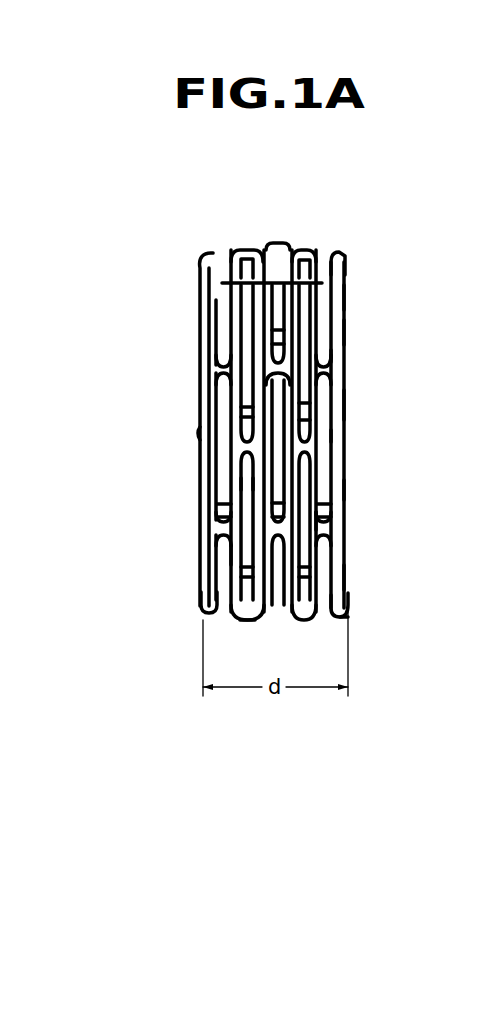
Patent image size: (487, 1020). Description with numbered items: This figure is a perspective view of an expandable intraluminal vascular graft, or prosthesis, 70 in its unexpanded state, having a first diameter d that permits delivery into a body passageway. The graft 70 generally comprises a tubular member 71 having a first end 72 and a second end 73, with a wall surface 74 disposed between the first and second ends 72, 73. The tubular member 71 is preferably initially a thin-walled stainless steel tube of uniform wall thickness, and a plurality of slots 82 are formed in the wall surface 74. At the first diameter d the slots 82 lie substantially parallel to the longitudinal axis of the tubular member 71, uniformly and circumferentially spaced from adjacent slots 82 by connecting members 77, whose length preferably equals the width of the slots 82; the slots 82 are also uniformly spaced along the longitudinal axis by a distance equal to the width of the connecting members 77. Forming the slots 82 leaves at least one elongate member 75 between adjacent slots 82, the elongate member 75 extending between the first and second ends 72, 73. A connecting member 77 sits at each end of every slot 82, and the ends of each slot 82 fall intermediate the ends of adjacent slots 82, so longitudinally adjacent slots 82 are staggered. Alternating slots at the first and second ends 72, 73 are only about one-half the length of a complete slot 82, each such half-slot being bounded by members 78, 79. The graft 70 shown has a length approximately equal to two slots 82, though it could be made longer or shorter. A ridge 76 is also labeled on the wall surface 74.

The expandable intraluminal vascular graft 70 is at (338, 248).
The tubular member 71 is at (345, 405).
The first end 72 is at (350, 620).
The second end 73 is at (275, 242).
The wall surface 74 is at (345, 337).
The elongate member 75 is at (345, 300).
The connector 76 is at (345, 357).
The connecting member 77 is at (273, 380).
The member 78 is at (232, 555).
The member 79 is at (333, 522).
The slot 82 is at (345, 492).